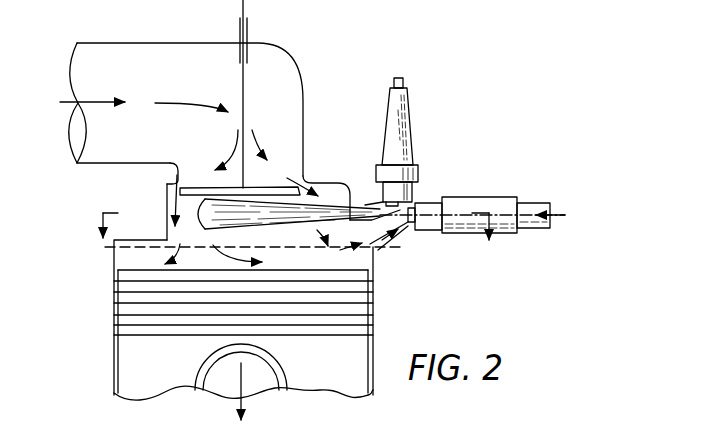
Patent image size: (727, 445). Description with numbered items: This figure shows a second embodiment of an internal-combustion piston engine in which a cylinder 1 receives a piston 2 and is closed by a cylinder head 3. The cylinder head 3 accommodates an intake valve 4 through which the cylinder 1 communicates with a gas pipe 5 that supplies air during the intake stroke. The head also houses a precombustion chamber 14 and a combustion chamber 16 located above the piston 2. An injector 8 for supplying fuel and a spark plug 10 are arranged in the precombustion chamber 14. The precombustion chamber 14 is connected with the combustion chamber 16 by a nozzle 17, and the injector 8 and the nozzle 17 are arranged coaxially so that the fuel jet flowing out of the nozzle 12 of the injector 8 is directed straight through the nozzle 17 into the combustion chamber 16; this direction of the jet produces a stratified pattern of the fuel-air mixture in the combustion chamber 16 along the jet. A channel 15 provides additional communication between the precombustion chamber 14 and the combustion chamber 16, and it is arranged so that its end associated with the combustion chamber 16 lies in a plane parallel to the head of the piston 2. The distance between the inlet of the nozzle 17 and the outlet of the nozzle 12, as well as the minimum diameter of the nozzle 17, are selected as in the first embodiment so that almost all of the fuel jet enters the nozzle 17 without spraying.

The cylinder 1 is at (113, 258).
The piston 2 is at (130, 352).
The cylinder head 3 is at (166, 210).
The intake valve 4 is at (260, 190).
The gas pipe 5 is at (298, 62).
The injector 8 is at (458, 205).
The spark plug 10 is at (393, 108).
The nozzle of the injector 12 is at (420, 222).
The precombustion chamber 14 is at (415, 202).
The channel 15 is at (398, 235).
The combustion chamber 16 is at (168, 197).
The nozzle of the precombustion chamber 17 is at (362, 200).